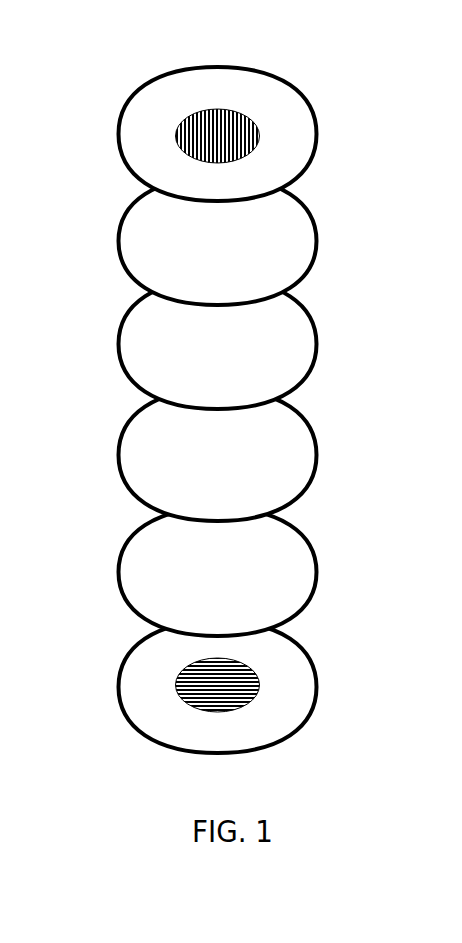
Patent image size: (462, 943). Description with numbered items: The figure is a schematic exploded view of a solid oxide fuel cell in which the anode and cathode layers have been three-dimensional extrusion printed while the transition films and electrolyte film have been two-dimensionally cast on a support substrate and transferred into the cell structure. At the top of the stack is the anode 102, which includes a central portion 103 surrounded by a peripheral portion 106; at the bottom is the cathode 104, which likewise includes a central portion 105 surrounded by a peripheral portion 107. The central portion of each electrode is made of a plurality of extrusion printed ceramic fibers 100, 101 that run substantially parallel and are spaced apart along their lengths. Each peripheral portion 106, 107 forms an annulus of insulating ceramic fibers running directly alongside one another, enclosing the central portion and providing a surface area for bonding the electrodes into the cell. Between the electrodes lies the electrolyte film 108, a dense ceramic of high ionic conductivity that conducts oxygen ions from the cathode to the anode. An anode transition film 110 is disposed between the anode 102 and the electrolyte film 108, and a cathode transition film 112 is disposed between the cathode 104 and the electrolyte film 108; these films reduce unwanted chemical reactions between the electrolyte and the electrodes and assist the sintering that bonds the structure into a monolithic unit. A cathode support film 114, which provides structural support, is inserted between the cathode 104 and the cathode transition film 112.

The 3D extrusion printed fibers 100 is at (183, 133).
The 3D extrusion printed fibers 101 is at (203, 688).
The anode 102 is at (320, 73).
The central portion 103 is at (260, 137).
The cathode 104 is at (334, 647).
The central portion 105 is at (260, 685).
The peripheral portion 106 is at (275, 175).
The peripheral portion 107 is at (258, 727).
The electrolyte film 108 is at (242, 370).
The anode transition film 110 is at (242, 259).
The cathode transition film 112 is at (243, 473).
The cathode support film 114 is at (243, 589).